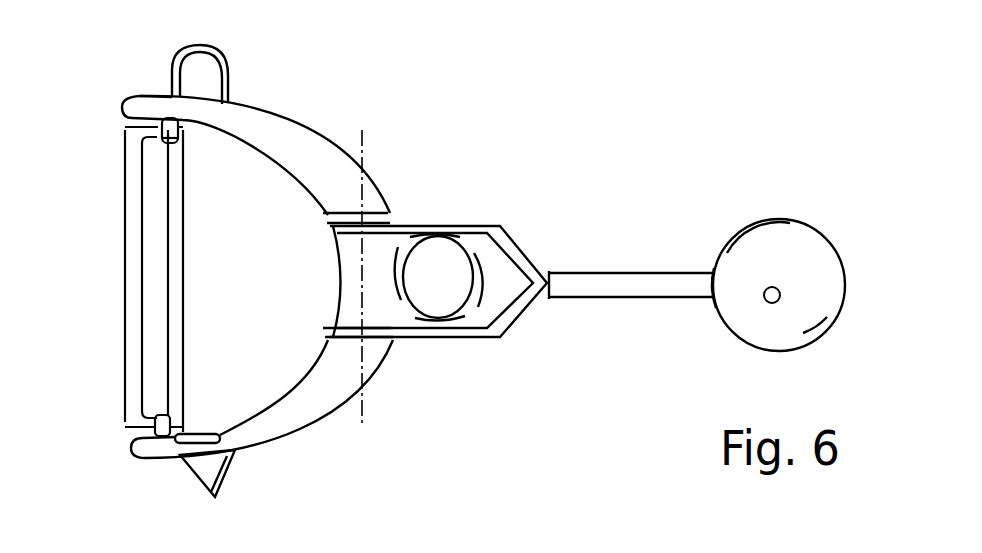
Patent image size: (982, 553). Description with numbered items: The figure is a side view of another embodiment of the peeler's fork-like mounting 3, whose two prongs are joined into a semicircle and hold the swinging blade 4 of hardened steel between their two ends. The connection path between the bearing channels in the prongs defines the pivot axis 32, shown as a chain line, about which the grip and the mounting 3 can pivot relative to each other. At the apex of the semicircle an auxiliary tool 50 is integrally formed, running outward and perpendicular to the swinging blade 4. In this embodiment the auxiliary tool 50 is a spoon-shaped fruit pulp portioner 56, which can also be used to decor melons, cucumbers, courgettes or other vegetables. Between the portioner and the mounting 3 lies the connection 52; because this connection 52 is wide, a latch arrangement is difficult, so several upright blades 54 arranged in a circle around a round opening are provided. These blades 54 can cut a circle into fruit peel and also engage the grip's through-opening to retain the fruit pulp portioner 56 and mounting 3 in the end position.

The mounting 3 is at (272, 112).
The swinging blade 4 is at (175, 268).
The pivot axis 32 is at (365, 407).
The auxiliary tool 50 is at (587, 276).
The connection 52 is at (625, 274).
The blades 54 is at (483, 271).
The fruit pulp portioner 56 is at (765, 228).